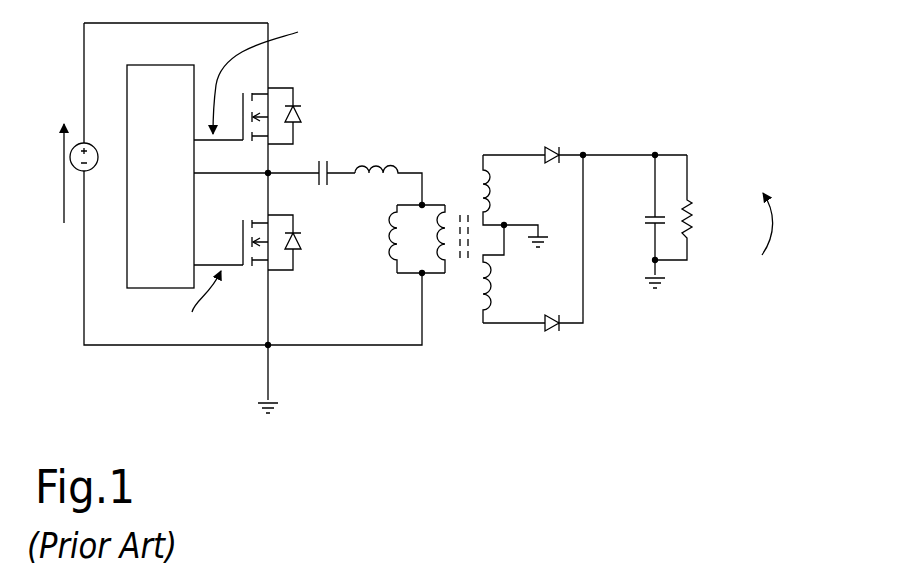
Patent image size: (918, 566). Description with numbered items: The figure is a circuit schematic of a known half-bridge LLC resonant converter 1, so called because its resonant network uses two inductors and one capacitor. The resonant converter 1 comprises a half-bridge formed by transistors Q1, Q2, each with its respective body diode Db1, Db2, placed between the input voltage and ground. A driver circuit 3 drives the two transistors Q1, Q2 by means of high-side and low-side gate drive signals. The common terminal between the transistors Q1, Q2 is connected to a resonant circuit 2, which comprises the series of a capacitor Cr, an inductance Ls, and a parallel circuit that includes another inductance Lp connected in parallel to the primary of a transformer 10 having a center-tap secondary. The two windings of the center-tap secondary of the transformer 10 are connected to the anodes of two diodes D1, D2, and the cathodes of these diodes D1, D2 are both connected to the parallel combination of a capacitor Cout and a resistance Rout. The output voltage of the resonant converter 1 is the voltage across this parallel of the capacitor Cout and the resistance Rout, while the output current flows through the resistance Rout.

The resonant converter 1 is at (518, 41).
The resonant circuit 2 is at (405, 135).
The driver circuit 3 is at (144, 64).
The transformer 10 is at (454, 195).
The transistor Q1 is at (256, 96).
The transistor Q2 is at (277, 271).
The body diode Db1 is at (308, 116).
The body diode Db2 is at (308, 242).
The capacitor Cr is at (311, 162).
The inductance Ls is at (388, 172).
The inductance Lp is at (406, 239).
The diode D1 is at (533, 142).
The diode D2 is at (533, 257).
The capacitor Cout is at (627, 221).
The resistance Rout is at (699, 207).